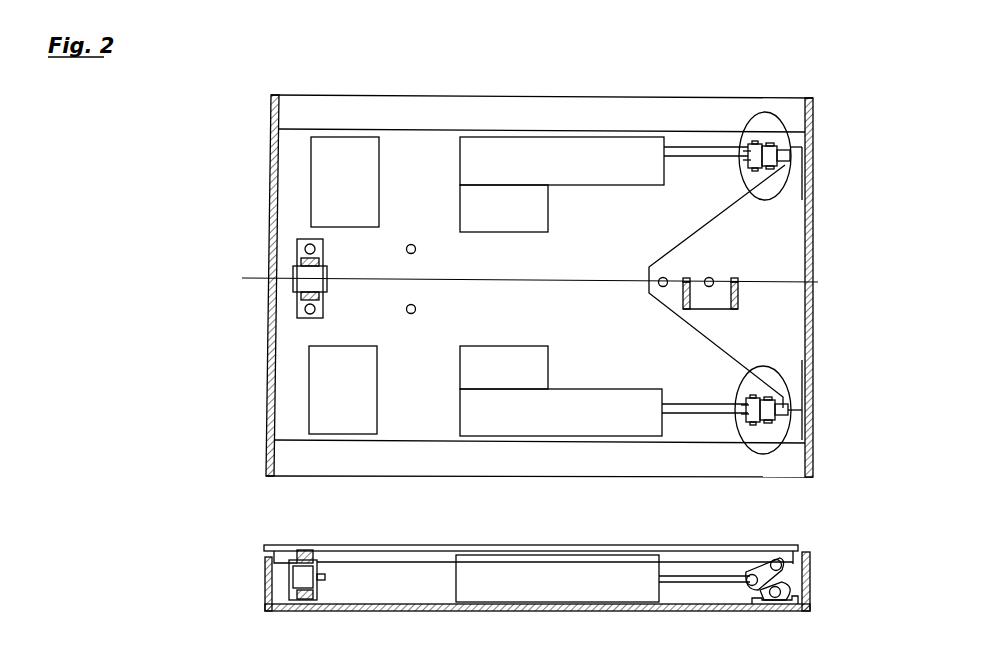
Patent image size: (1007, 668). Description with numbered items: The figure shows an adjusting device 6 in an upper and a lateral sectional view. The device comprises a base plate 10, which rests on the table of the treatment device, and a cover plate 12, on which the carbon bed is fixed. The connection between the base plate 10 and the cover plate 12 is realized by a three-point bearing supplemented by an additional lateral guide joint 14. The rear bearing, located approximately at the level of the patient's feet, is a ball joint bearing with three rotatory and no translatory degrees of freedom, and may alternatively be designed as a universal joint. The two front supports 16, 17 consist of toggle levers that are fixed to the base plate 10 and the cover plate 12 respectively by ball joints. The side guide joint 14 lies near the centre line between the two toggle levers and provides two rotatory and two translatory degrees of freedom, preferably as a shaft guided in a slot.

The adjusting device 6 is at (258, 232).
The base plate 10 is at (305, 616).
The cover plate 12 is at (260, 542).
The lateral guide joint 14 is at (742, 300).
The front support 16 is at (799, 136).
The front support 17 is at (798, 428).